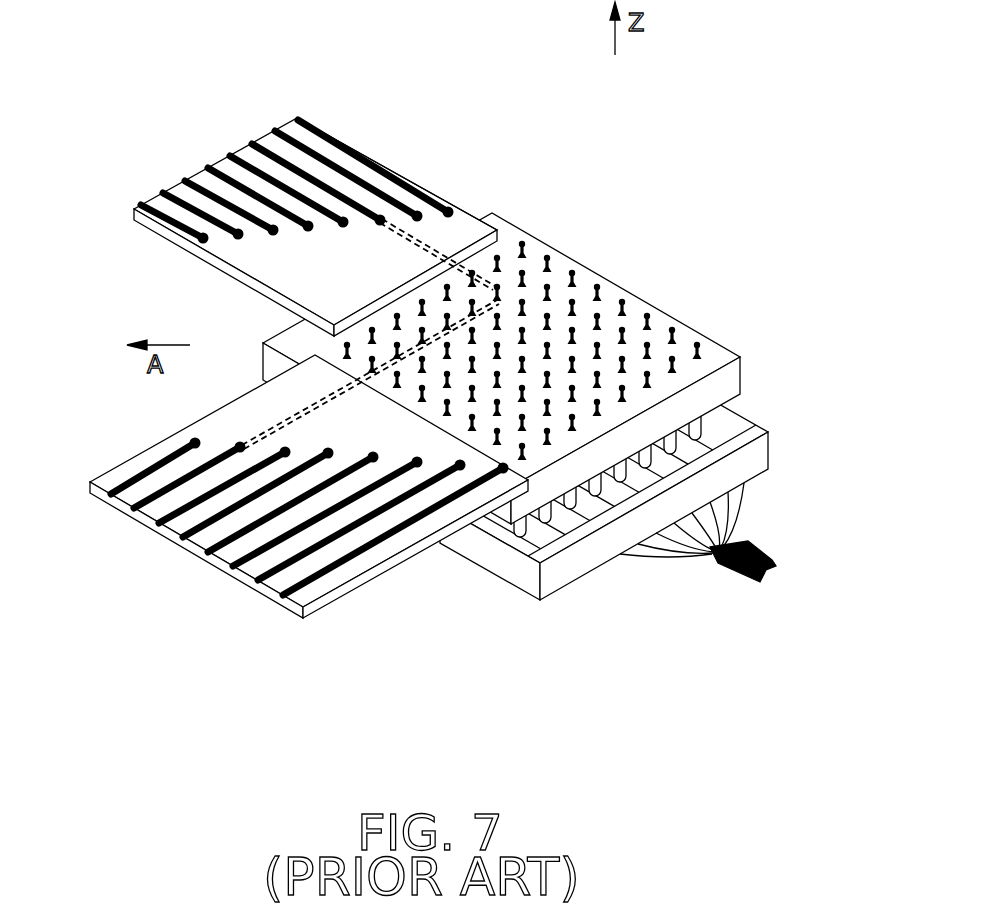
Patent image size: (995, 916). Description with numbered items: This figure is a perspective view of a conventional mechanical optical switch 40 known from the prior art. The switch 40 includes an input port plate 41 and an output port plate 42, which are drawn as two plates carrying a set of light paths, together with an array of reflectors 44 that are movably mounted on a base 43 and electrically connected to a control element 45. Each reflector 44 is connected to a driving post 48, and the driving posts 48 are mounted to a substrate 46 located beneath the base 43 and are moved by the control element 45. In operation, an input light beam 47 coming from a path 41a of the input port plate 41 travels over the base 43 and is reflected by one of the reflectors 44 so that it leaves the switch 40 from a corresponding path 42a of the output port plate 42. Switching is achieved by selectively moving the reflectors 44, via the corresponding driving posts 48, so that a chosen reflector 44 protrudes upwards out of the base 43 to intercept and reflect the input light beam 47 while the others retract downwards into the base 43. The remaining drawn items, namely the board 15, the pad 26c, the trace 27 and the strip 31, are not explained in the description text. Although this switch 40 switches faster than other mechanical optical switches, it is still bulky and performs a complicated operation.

The pin board 15 is at (710, 347).
The contact pad 26c is at (370, 456).
The hidden trace on lower plate 27 is at (277, 427).
The conductive strip 31 is at (378, 458).
The mechanical switch 40 is at (315, 185).
The input port plate 41 is at (343, 168).
The path 41a is at (320, 130).
The output port plate 42 is at (276, 486).
The path 42a is at (370, 546).
The base 43 is at (728, 383).
The reflectors 44 is at (597, 300).
The control element 45 is at (760, 553).
The substrate 46 is at (737, 472).
The input light beam 47 is at (422, 242).
The driving post 48 is at (710, 431).